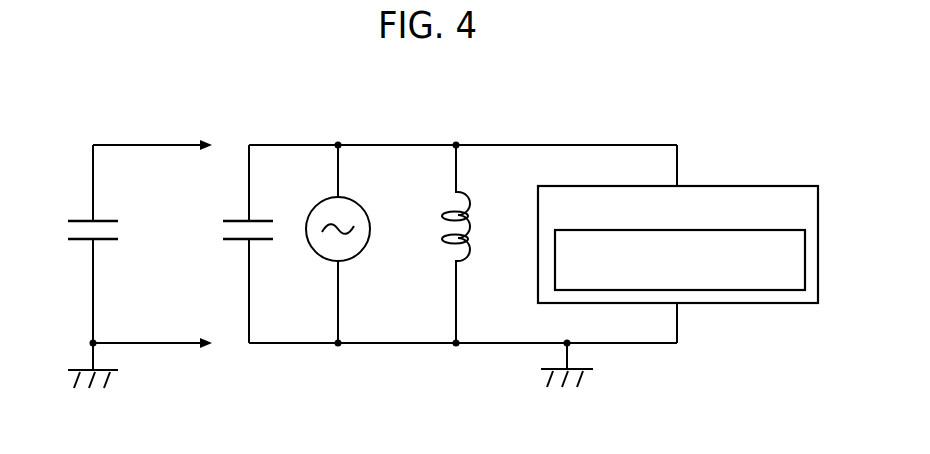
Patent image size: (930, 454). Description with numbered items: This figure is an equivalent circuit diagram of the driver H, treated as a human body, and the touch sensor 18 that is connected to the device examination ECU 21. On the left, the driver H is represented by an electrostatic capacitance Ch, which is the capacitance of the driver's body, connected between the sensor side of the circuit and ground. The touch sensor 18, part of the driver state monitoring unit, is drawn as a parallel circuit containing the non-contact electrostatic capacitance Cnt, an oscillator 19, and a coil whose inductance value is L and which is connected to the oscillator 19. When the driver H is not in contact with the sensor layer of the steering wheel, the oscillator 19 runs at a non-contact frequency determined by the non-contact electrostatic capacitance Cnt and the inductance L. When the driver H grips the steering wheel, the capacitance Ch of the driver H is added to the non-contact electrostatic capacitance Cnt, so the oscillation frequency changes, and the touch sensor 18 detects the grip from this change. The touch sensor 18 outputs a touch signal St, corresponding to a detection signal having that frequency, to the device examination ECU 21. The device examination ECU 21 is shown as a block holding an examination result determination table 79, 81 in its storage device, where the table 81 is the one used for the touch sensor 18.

The driver H is at (118, 233).
The electrostatic capacitance of the driver Ch is at (67, 228).
The touch sensor 18 is at (423, 232).
The non-contact electrostatic capacitance Cnt is at (222, 228).
The oscillator 19 is at (355, 203).
The inductance value of a coil L is at (475, 244).
The touch signal St is at (635, 230).
The device examination ECU 21 is at (678, 251).
The examination result determination table 79 is at (725, 290).
The examination result determination table 81 is at (680, 298).